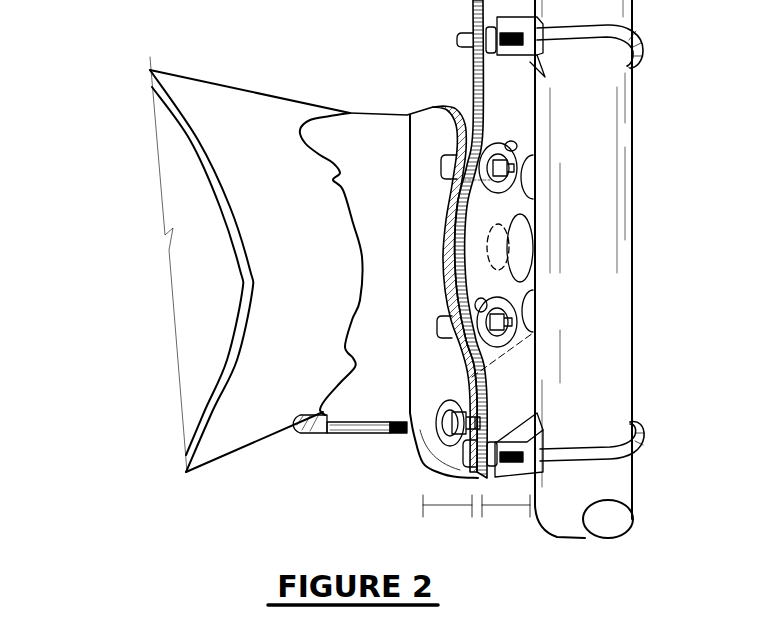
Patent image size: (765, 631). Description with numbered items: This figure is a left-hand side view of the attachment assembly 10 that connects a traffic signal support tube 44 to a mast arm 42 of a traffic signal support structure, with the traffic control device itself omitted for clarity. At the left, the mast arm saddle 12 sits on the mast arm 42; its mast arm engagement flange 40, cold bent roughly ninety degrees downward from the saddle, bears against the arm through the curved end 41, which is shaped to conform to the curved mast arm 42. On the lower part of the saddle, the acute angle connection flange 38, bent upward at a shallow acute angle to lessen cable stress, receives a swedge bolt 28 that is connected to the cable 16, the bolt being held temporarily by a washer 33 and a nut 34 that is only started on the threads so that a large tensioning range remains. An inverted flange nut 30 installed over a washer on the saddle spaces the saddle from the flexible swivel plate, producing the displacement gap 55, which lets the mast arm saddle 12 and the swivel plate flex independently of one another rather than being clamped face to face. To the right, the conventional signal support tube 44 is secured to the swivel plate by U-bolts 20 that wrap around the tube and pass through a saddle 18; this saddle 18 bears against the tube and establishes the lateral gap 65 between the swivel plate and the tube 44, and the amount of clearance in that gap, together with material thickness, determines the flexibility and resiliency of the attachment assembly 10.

The attachment assembly 10 is at (85, 192).
The mast arm saddle 12 is at (410, 72).
The cable 16 is at (310, 427).
The saddle 18 is at (525, 443).
The U-bolt 20 is at (640, 447).
The swedge bolt 28 is at (360, 427).
The inverted flange nut 30 is at (443, 323).
The washer 33 is at (440, 400).
The nut 34 is at (450, 418).
The acute angle connection flange 38 is at (425, 467).
The mast arm engagement flange 40 is at (360, 275).
The end of engagement flange 41 is at (353, 322).
The mast arm 42 is at (243, 322).
The signal support tube 44 is at (603, 250).
The displacement gap 55 is at (448, 505).
The gap 65 is at (507, 503).